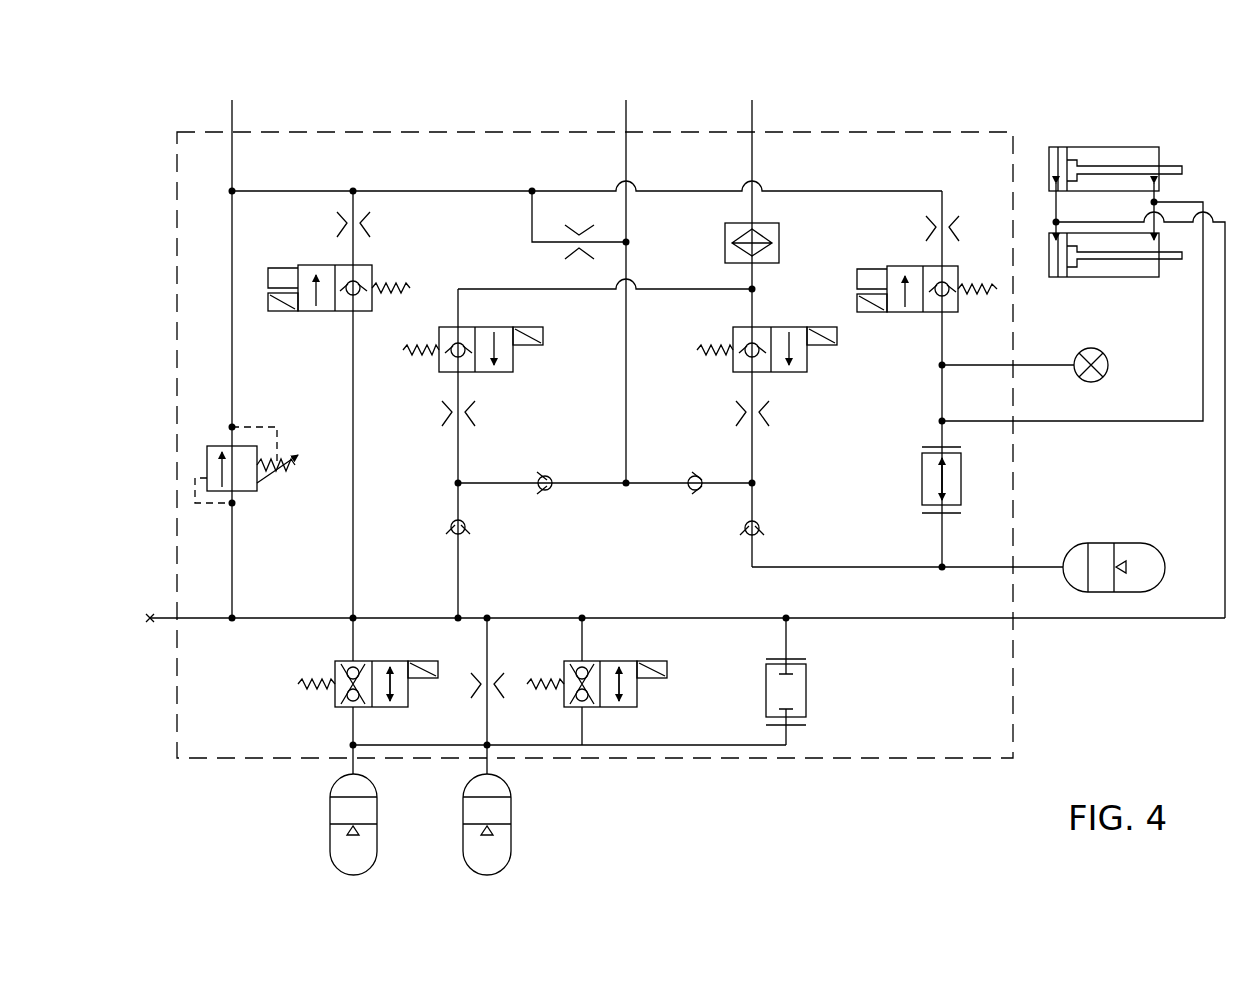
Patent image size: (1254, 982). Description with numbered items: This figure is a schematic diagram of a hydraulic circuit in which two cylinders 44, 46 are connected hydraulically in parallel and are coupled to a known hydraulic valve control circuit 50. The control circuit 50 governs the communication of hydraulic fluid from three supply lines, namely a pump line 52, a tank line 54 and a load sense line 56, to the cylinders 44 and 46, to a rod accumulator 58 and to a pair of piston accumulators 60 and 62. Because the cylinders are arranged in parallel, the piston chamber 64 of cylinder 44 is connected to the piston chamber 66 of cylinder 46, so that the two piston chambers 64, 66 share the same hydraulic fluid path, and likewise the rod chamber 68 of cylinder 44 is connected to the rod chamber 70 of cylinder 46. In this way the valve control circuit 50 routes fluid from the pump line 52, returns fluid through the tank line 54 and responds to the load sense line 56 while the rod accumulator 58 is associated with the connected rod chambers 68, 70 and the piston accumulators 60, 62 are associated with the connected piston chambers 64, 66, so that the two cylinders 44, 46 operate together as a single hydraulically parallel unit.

The hydraulic valve control circuit 50 is at (150, 97).
The pump line 52 is at (752, 110).
The tank line 54 is at (232, 110).
The load sense line 56 is at (626, 110).
The rod accumulator 58 is at (1155, 548).
The piston accumulator 60 is at (330, 860).
The piston accumulator 62 is at (511, 860).
The cylinder 44 is at (1124, 133).
The cylinder 46 is at (1124, 285).
The piston chamber 64 is at (1057, 150).
The piston chamber 66 is at (1057, 273).
The rod chamber 68 is at (1145, 160).
The rod chamber 70 is at (1155, 268).